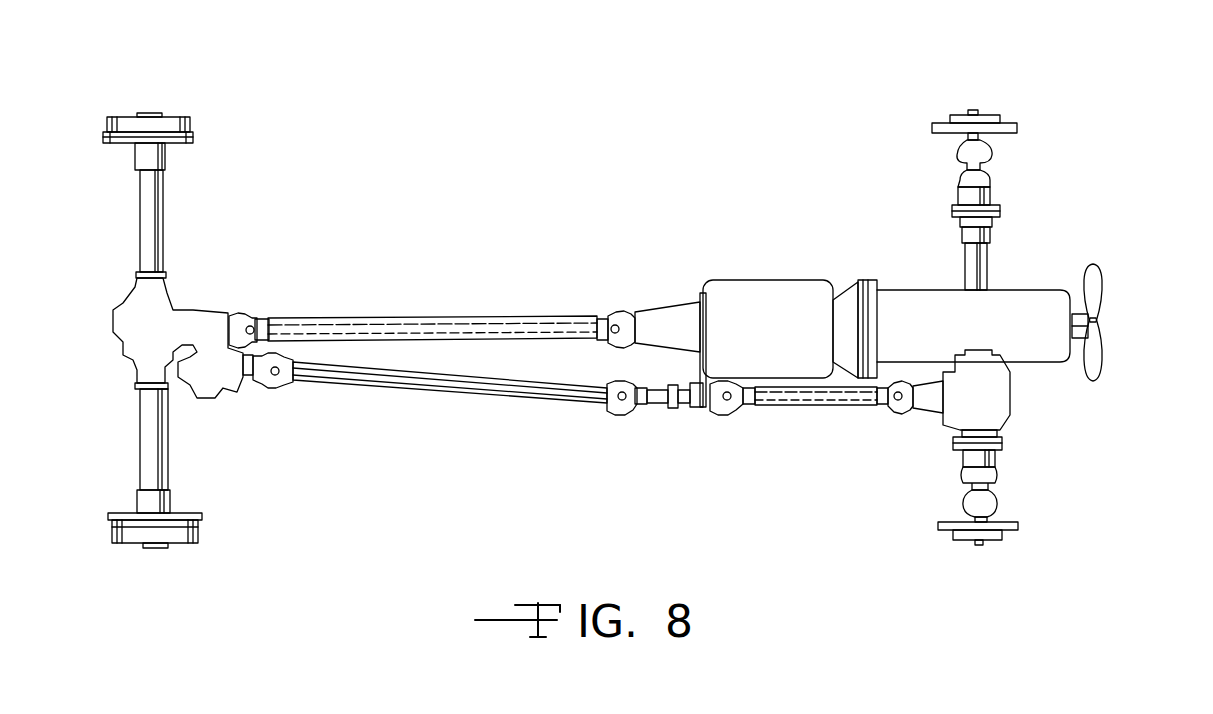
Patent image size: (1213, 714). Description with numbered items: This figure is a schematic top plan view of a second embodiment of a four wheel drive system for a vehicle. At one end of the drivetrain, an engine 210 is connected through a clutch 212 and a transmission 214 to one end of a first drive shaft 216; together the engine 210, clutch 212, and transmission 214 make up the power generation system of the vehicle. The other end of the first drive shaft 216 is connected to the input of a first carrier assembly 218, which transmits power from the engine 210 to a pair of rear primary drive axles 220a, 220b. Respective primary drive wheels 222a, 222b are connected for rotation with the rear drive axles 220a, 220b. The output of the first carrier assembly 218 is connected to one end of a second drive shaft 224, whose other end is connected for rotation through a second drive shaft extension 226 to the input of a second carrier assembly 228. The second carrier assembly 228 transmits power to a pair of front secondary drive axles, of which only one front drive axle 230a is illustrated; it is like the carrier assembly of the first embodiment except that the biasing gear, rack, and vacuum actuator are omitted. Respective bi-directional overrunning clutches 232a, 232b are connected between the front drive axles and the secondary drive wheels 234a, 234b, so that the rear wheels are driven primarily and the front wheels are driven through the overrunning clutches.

The engine 210 is at (1043, 313).
The clutch 212 is at (850, 297).
The transmission 214 is at (767, 290).
The first drive shaft 216 is at (440, 328).
The first carrier assembly 218 is at (167, 300).
The rear primary drive axle 220a is at (150, 228).
The rear primary drive axle 220b is at (153, 463).
The primary drive wheel 222a is at (168, 125).
The primary drive wheel 222b is at (177, 538).
The second drive shaft 224 is at (463, 395).
The second drive shaft extension 226 is at (833, 407).
The second carrier assembly 228 is at (987, 397).
The front secondary drive axle 230a is at (987, 268).
The bi-directional overrunning clutch 232a is at (1000, 223).
The bi-directional overrunning clutch 232b is at (987, 437).
The secondary drive wheel 234a is at (1017, 125).
The secondary drive wheel 234b is at (1017, 527).